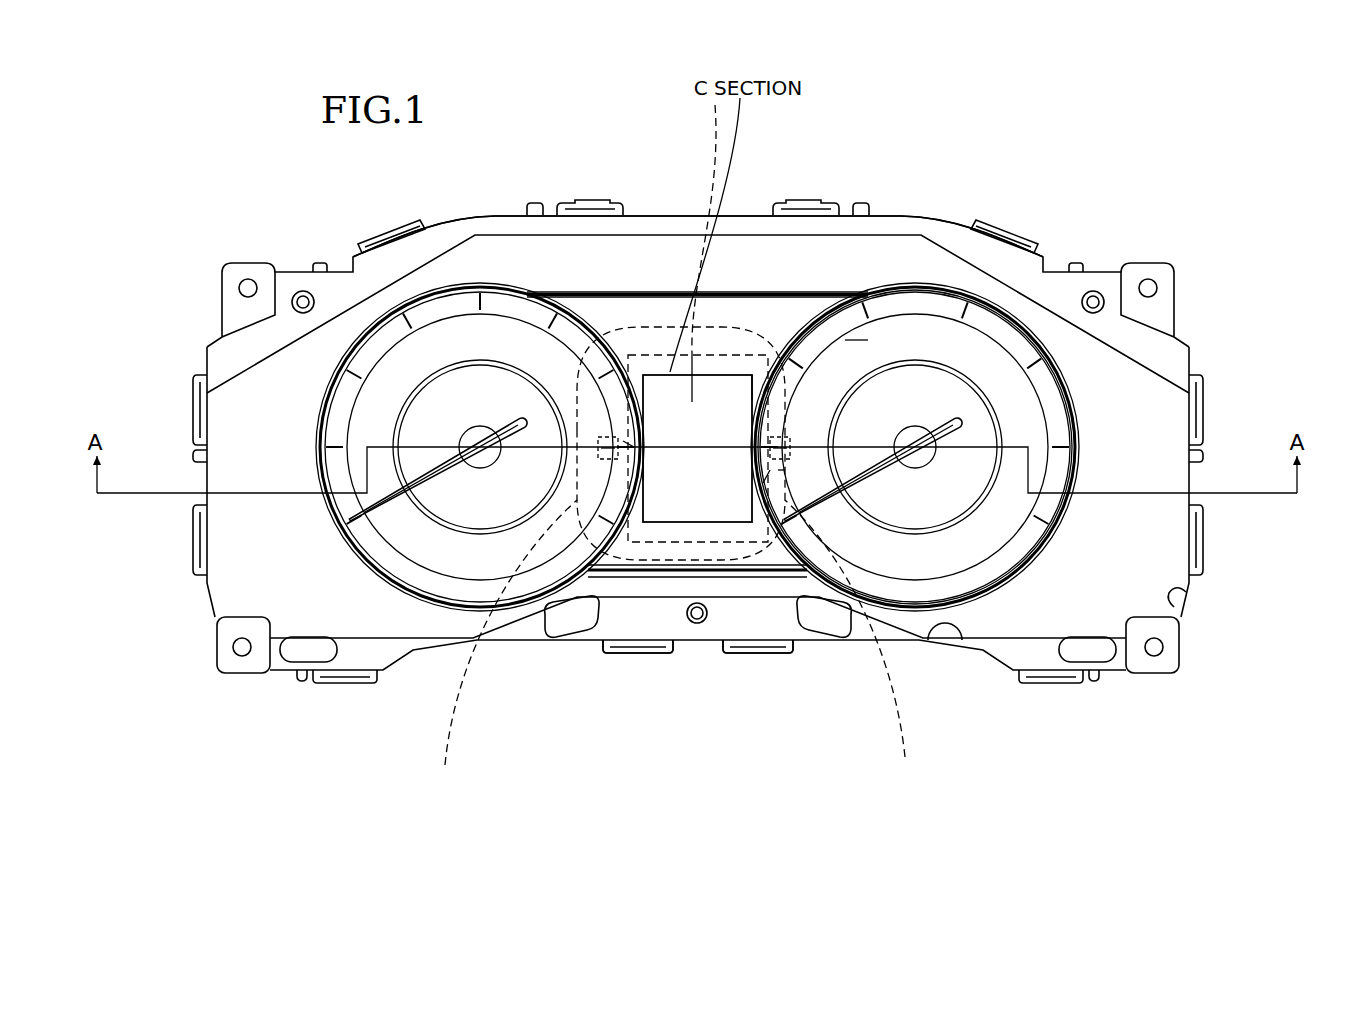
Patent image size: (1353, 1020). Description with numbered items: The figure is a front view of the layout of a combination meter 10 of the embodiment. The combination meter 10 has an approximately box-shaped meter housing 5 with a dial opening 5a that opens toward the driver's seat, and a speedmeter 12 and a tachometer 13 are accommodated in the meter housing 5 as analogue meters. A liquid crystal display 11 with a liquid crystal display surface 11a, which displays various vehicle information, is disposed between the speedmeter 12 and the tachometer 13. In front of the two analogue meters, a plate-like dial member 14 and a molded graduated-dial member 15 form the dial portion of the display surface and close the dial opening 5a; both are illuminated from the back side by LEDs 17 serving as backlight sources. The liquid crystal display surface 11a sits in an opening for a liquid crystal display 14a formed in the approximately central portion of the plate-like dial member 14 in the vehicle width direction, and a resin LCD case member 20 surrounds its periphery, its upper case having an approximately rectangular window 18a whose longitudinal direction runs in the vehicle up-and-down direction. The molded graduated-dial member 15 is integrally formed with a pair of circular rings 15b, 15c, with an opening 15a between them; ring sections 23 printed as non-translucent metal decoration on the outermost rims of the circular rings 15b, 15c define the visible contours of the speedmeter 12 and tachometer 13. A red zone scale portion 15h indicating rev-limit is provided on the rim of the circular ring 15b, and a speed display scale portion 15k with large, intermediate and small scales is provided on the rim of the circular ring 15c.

The combination meter 10 is at (1117, 252).
The meter housing 5 is at (967, 226).
The dial opening 5a is at (1172, 596).
The liquid crystal display 11 is at (768, 395).
The liquid crystal display surface 11a is at (720, 372).
The speedmeter 12 is at (1003, 337).
The tachometer 13 is at (483, 283).
The plate-like dial member 14 is at (983, 645).
The opening for a liquid crystal display 14a is at (755, 370).
The molded graduated-dial member 15 is at (1022, 582).
The opening 15a is at (845, 340).
The circular ring 15b is at (643, 462).
The circular ring 15c is at (778, 470).
The red zone scale portion 15h is at (623, 441).
The speed display scale portion 15k is at (772, 458).
The LED 17 is at (672, 647).
The window 18a is at (660, 372).
The LCD case member 20 is at (660, 542).
The ring section 23 is at (652, 470).